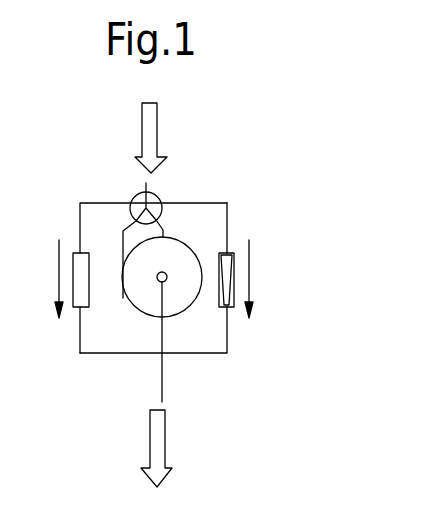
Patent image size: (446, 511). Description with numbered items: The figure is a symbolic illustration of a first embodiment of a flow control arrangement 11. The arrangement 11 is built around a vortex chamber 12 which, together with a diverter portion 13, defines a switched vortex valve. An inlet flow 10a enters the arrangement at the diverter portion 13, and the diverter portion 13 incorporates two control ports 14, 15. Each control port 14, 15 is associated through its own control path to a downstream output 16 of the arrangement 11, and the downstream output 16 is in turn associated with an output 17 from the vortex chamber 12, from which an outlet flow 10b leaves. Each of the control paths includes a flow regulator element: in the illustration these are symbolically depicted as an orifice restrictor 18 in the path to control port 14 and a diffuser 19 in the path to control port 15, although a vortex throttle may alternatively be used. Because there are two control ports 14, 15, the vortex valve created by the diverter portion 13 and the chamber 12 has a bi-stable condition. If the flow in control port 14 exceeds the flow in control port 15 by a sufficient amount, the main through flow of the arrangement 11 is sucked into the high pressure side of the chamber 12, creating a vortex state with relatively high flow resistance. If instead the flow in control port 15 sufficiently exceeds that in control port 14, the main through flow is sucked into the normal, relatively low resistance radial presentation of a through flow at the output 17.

The fluid inlet flow 10a is at (141, 126).
The fluid outlet flow 10b is at (157, 447).
The flow control arrangement 11 is at (289, 215).
The vortex chamber 12 is at (138, 290).
The diverter portion 13 is at (157, 200).
The control port 14 is at (109, 203).
The control port 15 is at (216, 203).
The downstream output 16 is at (163, 380).
The output 17 is at (164, 297).
The orifice restrictor 18 is at (79, 256).
The diffuser 19 is at (219, 258).